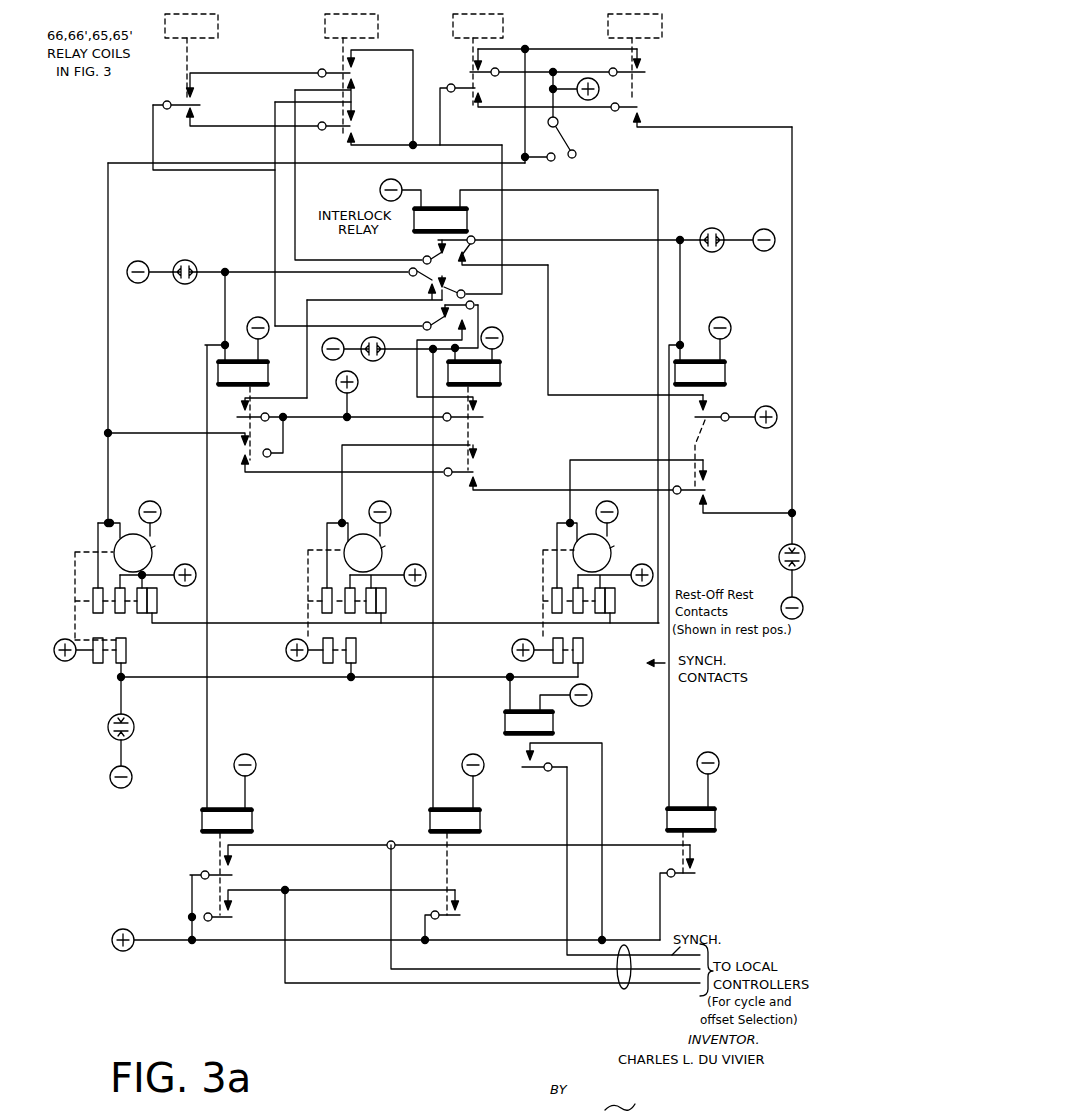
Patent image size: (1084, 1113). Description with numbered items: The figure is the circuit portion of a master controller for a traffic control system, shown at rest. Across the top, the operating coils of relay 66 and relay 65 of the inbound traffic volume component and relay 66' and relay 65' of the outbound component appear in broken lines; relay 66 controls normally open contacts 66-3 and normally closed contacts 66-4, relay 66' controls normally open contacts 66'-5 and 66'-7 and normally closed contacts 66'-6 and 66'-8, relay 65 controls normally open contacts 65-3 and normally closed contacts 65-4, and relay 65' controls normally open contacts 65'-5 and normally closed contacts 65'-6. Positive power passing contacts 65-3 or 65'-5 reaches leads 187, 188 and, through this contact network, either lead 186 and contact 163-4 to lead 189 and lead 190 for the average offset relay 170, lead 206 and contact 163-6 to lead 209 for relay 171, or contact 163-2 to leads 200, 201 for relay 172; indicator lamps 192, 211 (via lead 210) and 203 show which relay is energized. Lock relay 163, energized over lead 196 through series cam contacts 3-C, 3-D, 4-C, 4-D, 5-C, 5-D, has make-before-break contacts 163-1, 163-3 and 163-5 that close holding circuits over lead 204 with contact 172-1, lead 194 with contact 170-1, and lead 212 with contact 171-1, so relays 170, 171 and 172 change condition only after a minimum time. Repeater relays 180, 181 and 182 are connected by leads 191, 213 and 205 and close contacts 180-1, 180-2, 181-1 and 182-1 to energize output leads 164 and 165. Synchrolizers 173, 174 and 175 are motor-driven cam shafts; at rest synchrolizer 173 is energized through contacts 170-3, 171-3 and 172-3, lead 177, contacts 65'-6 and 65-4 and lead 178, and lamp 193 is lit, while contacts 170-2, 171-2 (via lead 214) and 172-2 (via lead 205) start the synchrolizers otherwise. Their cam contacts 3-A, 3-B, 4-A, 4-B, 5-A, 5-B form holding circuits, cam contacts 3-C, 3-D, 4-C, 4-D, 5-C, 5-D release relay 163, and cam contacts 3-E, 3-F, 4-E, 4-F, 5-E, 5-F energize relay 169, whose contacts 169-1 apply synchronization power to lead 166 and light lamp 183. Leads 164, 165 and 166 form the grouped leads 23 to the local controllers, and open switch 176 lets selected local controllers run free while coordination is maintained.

The relay 66 is at (191, 57).
The relay 66' is at (351, 74).
The relay 65 is at (478, 59).
The relay 65' is at (635, 57).
The normally open contacts 66-3 is at (194, 98).
The normally closed contacts 66-4 is at (192, 116).
The normally open contacts 66'-5 is at (381, 97).
The normally closed contacts 66'-6 is at (345, 99).
The normally open contacts 66'-7 is at (335, 112).
The normally closed contacts 66'-8 is at (425, 138).
The normally open contacts 65-3 is at (474, 67).
The normally closed contacts 65-4 is at (538, 114).
The normally open contacts 65'-5 is at (661, 60).
The normally closed contacts 65'-6 is at (713, 121).
The switch 176 is at (572, 137).
The lead 187 is at (522, 131).
The lead 188 is at (334, 165).
The lock relay 163 is at (519, 206).
The lead 206 is at (275, 212).
The lead 186 is at (503, 214).
The lead 196 is at (658, 326).
The lead 200 is at (597, 241).
The indicator lamp 203 is at (711, 229).
The lead 201 is at (683, 284).
The indicator lamp 192 is at (185, 261).
The lead 189 is at (245, 271).
The lead 190 is at (224, 326).
The lead 178 is at (107, 326).
The lead 191 is at (208, 531).
The make-before-break contact 163-1 is at (493, 252).
The contact 163-2 is at (426, 250).
The make-before-break contact 163-3 is at (418, 280).
The contact 163-4 is at (471, 285).
The make-before-break contact 163-5 is at (476, 306).
The contact 163-6 is at (426, 320).
The lead 209 is at (489, 330).
The lead 204 is at (549, 292).
The lead 194 is at (329, 305).
The indicator lamp 211 is at (362, 334).
The lead 210 is at (408, 354).
The lead 177 is at (792, 349).
The average offset relay 170 is at (243, 351).
The contact 170-1 is at (256, 404).
The contact 170-2 is at (230, 475).
The contact 170-3 is at (258, 462).
The lead 212 is at (383, 417).
The lead 214 is at (372, 445).
The relay 171 is at (475, 356).
The contact 171-1 is at (486, 406).
The contact 171-2 is at (483, 460).
The contact 171-3 is at (480, 478).
The lead 205 is at (602, 461).
The lead 213 is at (433, 530).
The relay 172 is at (700, 562).
The contact 172-1 is at (706, 413).
The contact 172-2 is at (708, 482).
The contact 172-3 is at (711, 502).
The indicator lamp 193 is at (780, 560).
The synchrolizer 173 is at (146, 536).
The synchrolizer 174 is at (382, 536).
The synchrolizer 175 is at (611, 536).
The cam contact 3-A is at (93, 603).
The cam contact 3-B is at (116, 621).
The cam contact 3-C is at (144, 624).
The cam contact 3-D is at (157, 604).
The cam contact 3-E is at (97, 671).
The cam contact 3-F is at (126, 659).
The cam contact 4-A is at (313, 598).
The cam contact 4-B is at (342, 613).
The cam contact 4-C is at (371, 589).
The cam contact 4-D is at (383, 615).
The cam contact 4-E is at (326, 667).
The cam contact 4-F is at (359, 653).
The cam contact 5-A is at (543, 598).
The cam contact 5-B is at (572, 613).
The cam contact 5-C is at (599, 589).
The cam contact 5-D is at (612, 615).
The cam contact 5-E is at (554, 663).
The cam contact 5-F is at (584, 648).
The indicator lamp 183 is at (107, 731).
The relay 169 is at (560, 710).
The contacts 169-1 is at (564, 843).
The lead 166 is at (567, 956).
The repeater relay 180 is at (229, 793).
The contact 180-1 is at (234, 874).
The contact 180-2 is at (248, 922).
The repeater relay 181 is at (457, 793).
The contact 181-1 is at (459, 910).
The repeater relay 182 is at (693, 792).
The contact 182-1 is at (696, 870).
The output lead 164 is at (280, 976).
The output lead 165 is at (388, 963).
The grouped leads 23 is at (627, 989).